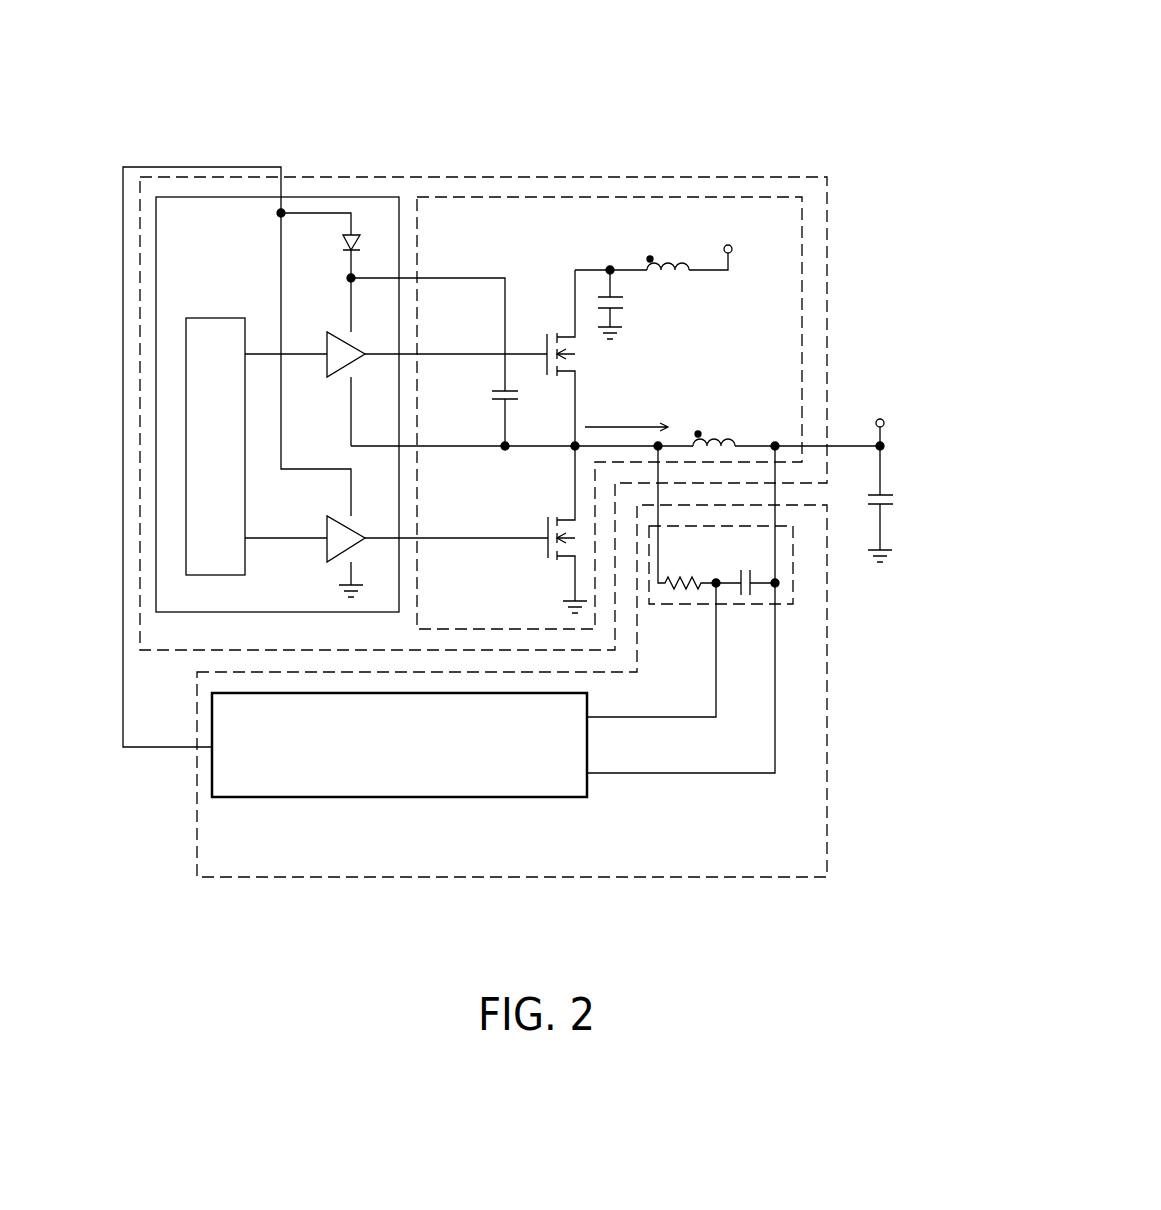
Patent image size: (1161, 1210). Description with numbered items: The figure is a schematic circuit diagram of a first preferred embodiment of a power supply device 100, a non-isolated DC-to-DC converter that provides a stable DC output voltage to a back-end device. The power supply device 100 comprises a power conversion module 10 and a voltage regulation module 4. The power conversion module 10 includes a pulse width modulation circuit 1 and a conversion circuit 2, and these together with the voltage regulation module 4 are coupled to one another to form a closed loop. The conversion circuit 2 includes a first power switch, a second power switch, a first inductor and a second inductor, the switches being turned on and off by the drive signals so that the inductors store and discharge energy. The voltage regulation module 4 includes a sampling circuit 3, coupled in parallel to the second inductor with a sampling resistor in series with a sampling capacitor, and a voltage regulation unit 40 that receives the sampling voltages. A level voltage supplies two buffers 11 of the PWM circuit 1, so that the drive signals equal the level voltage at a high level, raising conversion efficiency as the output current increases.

The power supply device 100 is at (746, 108).
The power conversion module 10 is at (783, 174).
The pulse width modulation (PWM) circuit 1 is at (357, 197).
The buffer 11 is at (343, 335).
The conversion circuit 2 is at (803, 217).
The sampling circuit 3 is at (746, 605).
The voltage regulation module 4 is at (828, 637).
The voltage regulation unit 40 is at (513, 798).